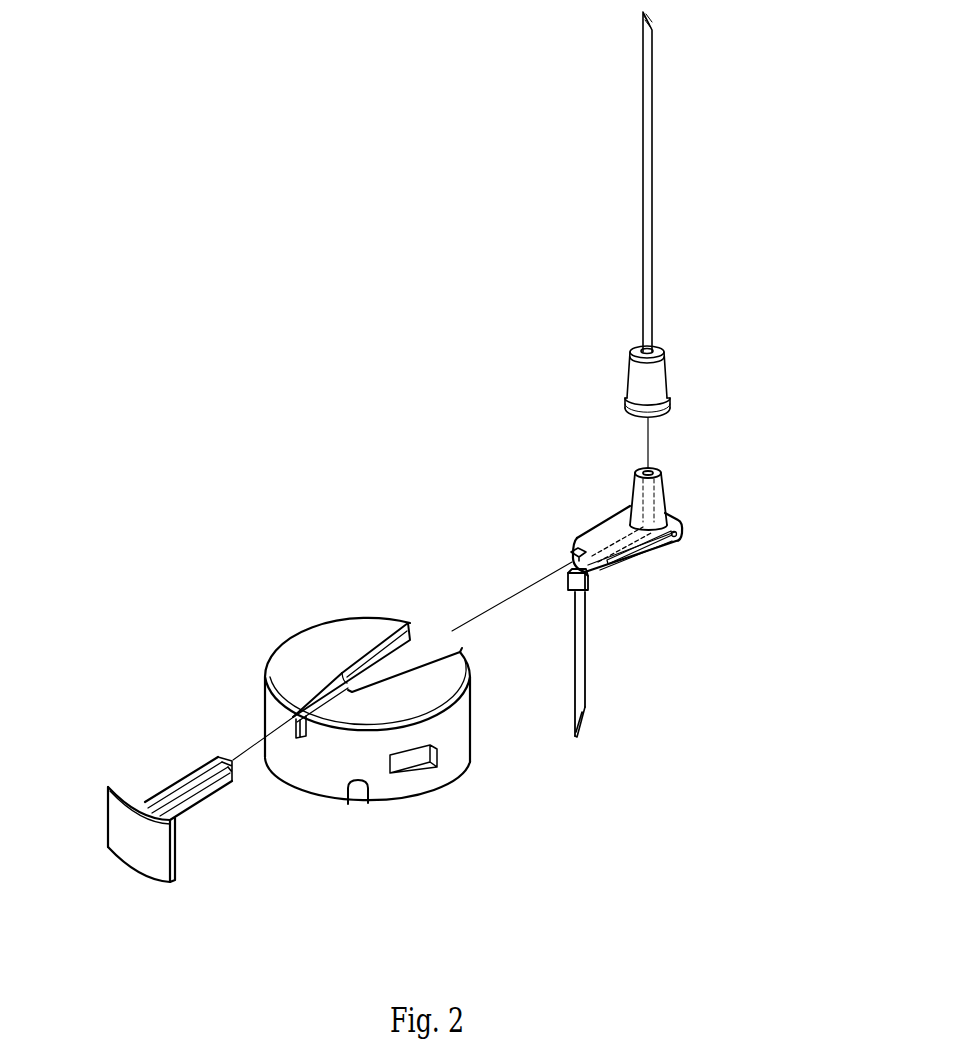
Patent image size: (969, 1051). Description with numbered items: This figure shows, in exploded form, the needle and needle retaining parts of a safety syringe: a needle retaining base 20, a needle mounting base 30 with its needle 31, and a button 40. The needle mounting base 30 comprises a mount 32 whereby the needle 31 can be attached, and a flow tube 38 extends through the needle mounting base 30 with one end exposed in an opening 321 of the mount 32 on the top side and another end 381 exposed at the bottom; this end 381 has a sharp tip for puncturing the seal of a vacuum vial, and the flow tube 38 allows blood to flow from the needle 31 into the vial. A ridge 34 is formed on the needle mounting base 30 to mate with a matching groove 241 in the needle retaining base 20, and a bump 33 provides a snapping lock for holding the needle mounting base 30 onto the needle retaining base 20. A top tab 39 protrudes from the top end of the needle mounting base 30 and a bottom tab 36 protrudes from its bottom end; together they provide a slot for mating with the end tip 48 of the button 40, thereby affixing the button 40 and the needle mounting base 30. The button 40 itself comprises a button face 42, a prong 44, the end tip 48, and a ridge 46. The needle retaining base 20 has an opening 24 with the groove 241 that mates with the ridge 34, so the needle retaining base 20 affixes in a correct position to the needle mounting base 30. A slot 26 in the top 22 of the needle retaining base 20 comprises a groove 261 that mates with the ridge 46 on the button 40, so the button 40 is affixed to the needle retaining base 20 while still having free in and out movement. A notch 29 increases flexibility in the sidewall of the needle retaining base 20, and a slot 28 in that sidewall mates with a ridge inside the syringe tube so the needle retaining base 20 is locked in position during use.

The needle retaining base 20 is at (303, 600).
The top 22 is at (335, 637).
The opening 24 is at (418, 640).
The groove 241 is at (393, 637).
The slot 26 is at (312, 717).
The groove 261 is at (303, 724).
The slot 28 is at (423, 762).
The notch 29 is at (357, 797).
The needle mounting base 30 is at (583, 450).
The needle 31 is at (659, 377).
The mount 32 is at (663, 493).
The opening 321 is at (660, 469).
The bump 33 is at (678, 540).
The ridge 34 is at (648, 552).
The bottom tab 36 is at (590, 591).
The flow tube 38 is at (585, 633).
The end of flow tube 381 is at (585, 710).
The top tab 39 is at (573, 548).
The button 40 is at (92, 723).
The button face 42 is at (137, 838).
The prong 44 is at (187, 775).
The ridge 46 is at (207, 793).
The end tip 48 is at (228, 757).